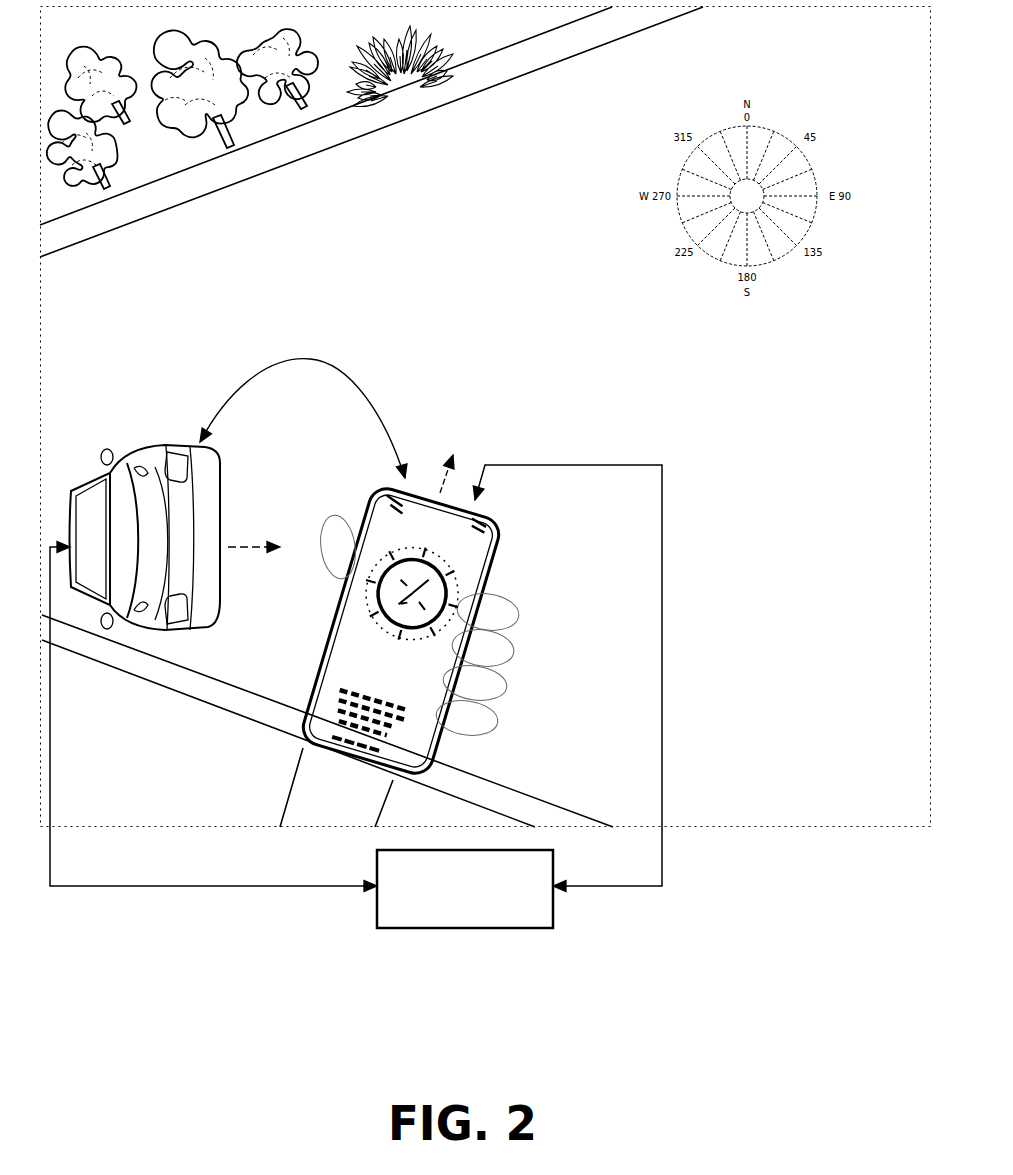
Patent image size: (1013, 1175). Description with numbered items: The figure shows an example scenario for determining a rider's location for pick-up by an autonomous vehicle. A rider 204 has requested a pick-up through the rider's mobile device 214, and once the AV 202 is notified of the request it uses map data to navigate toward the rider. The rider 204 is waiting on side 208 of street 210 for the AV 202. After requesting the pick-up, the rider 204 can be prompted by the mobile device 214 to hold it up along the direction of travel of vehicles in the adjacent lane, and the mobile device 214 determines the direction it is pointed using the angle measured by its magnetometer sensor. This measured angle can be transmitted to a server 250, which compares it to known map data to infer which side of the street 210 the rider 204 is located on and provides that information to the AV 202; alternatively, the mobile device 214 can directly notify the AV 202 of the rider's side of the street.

The autonomous vehicle 202 is at (155, 447).
The rider 204 is at (298, 760).
The side 208 is at (165, 692).
The street 210 is at (490, 395).
The mobile device 214 is at (497, 573).
The server 250 is at (470, 928).